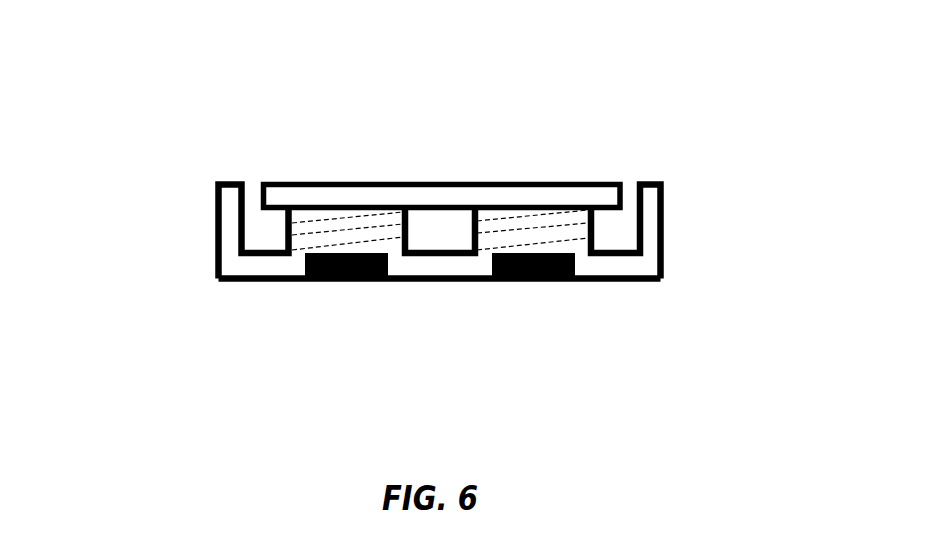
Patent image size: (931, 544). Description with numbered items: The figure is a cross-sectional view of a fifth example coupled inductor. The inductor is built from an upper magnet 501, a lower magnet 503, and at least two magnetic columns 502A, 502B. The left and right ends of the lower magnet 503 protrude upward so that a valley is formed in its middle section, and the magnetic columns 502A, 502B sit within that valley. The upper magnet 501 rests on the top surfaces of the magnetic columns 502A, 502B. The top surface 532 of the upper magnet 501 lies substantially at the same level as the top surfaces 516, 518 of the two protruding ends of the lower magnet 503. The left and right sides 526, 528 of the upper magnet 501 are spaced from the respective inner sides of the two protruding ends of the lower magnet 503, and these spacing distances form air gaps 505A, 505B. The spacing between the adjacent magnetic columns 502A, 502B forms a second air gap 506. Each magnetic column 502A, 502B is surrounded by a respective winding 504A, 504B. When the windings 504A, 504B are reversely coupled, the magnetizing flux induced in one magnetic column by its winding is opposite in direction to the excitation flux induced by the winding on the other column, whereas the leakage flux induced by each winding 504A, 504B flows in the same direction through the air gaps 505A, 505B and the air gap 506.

The upper magnet 501 is at (442, 120).
The magnetic column 502A is at (360, 232).
The magnetic column 502B is at (528, 235).
The lower magnet 503 is at (445, 268).
The winding 504A is at (332, 228).
The winding 504B is at (549, 230).
The air gap I 505A is at (255, 197).
The air gap I 505B is at (772, 120).
The air gap II 506 is at (438, 232).
The top surface of protruding end of lower magnet 516 is at (220, 183).
The top surface of protruding end of lower magnet 518 is at (648, 182).
The left side of upper magnet 526 is at (413, 145).
The right side of upper magnet 528 is at (617, 183).
The top surface of upper magnet 532 is at (413, 183).